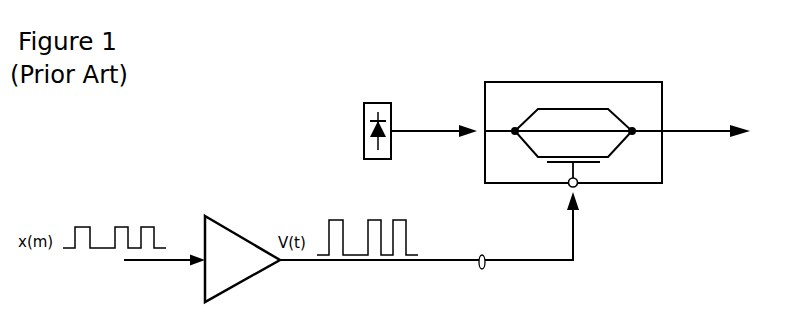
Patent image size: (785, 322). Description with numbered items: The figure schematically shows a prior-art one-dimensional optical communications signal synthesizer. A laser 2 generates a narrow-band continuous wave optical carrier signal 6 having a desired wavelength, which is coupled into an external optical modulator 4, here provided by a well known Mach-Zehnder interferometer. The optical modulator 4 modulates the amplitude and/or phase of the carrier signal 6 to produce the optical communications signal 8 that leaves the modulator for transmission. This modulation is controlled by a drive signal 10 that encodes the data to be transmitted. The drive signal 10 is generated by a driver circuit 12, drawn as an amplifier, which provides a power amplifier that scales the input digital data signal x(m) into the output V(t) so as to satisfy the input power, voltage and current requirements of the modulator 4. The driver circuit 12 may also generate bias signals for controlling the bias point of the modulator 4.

The laser 2 is at (378, 103).
The optical modulator 4 is at (635, 82).
The carrier signal 6 is at (420, 131).
The optical communications signal 8 is at (718, 131).
The drive signal 10 is at (482, 255).
The driver circuit 12 is at (237, 236).